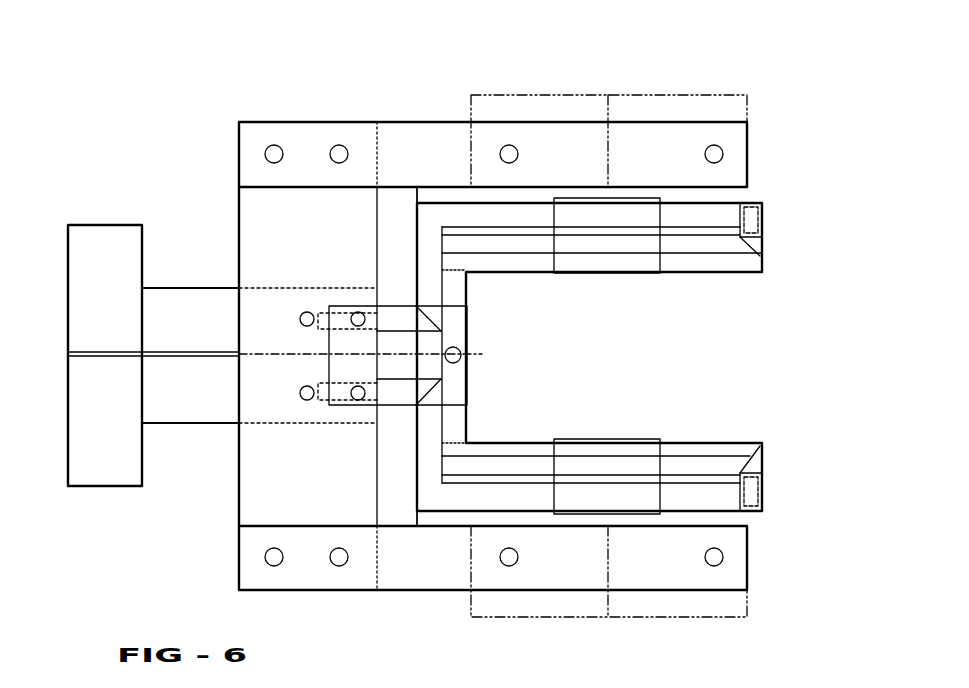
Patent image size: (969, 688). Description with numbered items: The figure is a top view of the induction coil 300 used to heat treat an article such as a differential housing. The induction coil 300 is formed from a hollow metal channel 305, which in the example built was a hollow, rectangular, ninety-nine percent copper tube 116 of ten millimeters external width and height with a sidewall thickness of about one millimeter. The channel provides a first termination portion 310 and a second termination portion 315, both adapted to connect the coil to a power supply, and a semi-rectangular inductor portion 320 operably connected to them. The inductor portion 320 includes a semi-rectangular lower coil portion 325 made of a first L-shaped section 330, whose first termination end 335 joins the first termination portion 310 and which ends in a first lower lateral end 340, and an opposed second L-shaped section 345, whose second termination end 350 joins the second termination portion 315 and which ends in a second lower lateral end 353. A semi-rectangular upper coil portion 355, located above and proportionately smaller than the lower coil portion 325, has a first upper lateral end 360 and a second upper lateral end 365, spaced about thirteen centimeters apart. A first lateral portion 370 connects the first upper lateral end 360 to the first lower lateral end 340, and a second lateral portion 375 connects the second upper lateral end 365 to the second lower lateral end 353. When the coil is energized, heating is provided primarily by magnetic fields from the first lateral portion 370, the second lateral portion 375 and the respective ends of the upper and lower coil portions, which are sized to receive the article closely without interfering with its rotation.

The induction coil 300 is at (457, 84).
The semi-rectangular inductor portion 320 is at (426, 190).
The second L-shaped section 345 is at (428, 230).
The semi-rectangular upper coil portion 355 is at (672, 271).
The second upper lateral end 365 is at (743, 273).
The second lower lateral end 353 is at (763, 220).
The hollow metal channel 305 is at (752, 203).
The second lateral portion 375 is at (757, 243).
The first lateral portion 370 is at (758, 470).
The first upper lateral end 360 is at (746, 450).
The copper tube 116 is at (760, 445).
The first lower lateral end 340 is at (762, 495).
The first termination portion 310 is at (397, 393).
The second termination portion 315 is at (402, 318).
The second termination end 350 is at (437, 318).
The first termination end 335 is at (435, 398).
The semi-rectangular lower coil portion 325 is at (413, 455).
The first L-shaped section 330 is at (425, 474).